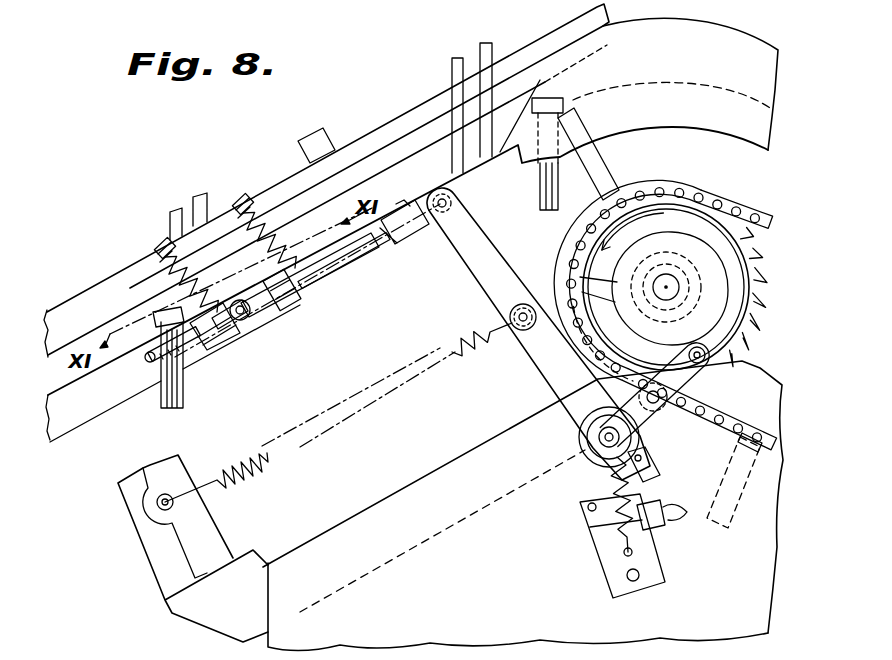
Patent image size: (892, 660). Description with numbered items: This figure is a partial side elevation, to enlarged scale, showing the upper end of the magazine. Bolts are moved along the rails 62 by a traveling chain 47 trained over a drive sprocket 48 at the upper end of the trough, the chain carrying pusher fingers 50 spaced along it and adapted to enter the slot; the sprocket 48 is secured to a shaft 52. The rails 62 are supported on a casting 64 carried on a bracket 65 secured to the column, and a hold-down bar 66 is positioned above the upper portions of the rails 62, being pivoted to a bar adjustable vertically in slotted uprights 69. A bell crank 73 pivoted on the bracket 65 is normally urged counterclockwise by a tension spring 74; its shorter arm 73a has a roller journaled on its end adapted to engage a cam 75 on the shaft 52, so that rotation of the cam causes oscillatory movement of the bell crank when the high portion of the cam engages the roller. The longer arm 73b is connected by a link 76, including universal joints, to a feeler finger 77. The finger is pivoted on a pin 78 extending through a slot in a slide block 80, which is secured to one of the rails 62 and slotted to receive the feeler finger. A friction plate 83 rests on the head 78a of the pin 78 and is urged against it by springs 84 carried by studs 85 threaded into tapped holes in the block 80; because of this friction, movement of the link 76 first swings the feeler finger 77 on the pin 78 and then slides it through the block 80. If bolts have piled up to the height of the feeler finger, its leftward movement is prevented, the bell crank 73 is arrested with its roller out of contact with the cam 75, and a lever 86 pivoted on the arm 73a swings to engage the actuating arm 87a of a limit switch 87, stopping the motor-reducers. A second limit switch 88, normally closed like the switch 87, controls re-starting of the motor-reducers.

The traveling chain 47 is at (738, 212).
The drive sprocket 48 is at (758, 323).
The pusher fingers 50 is at (603, 157).
The shaft 52 is at (669, 284).
The rails 62 is at (370, 263).
The casting 64 is at (168, 551).
The bracket 65 is at (448, 468).
The hold-down bar 66 is at (372, 128).
The slotted uprights 69 is at (493, 48).
The bell crank 73 is at (548, 378).
The shorter arm 73a is at (653, 432).
The longer arm 73b is at (474, 241).
The tension spring 74 is at (250, 446).
The cam 75 is at (720, 280).
The link 76 is at (338, 283).
The feeler finger 77 is at (185, 370).
The pin 78 is at (250, 343).
The head of the pin 78a is at (228, 290).
The slide block 80 is at (303, 294).
The friction plate 83 is at (263, 307).
The springs 84 is at (262, 224).
The studs 85 is at (157, 238).
The lever 86 is at (697, 392).
The limit switch 87 is at (600, 553).
The actuating arm 87a is at (644, 483).
The second limit switch 88 is at (595, 481).